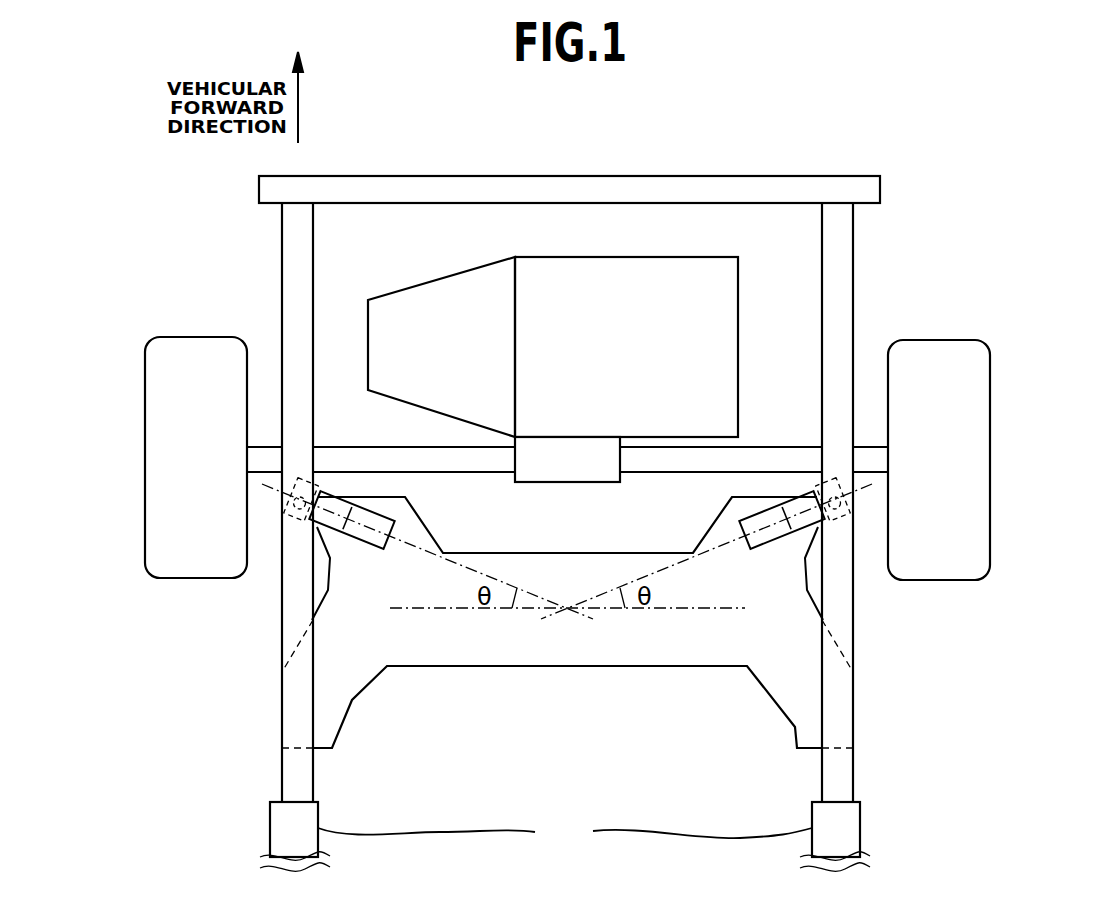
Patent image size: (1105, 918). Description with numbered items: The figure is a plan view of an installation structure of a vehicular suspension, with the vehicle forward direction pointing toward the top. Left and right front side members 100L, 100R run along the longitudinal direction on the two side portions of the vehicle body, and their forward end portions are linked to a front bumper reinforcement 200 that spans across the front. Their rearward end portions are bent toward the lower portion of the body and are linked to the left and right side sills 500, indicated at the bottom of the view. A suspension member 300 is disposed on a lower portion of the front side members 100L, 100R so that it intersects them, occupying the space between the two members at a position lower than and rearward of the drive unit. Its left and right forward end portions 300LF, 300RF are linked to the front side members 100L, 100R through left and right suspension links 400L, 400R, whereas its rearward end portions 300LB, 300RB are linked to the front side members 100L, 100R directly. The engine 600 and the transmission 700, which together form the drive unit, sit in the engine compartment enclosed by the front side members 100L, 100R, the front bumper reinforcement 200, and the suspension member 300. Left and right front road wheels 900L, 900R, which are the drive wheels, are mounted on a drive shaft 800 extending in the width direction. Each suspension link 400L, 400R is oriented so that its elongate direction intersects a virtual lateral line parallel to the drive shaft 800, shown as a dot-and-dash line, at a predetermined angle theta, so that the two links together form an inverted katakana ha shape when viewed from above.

The front bumper reinforcement 200 is at (568, 176).
The left front side member 100L is at (282, 240).
The right front side member 100R is at (853, 240).
The left front road wheel 900L is at (145, 458).
The right front road wheel 900R is at (992, 462).
The drive shaft 800 is at (763, 458).
The transmission 700 is at (428, 282).
The engine 600 is at (663, 257).
The suspension member 300 is at (567, 619).
The left forward end portion of suspension member 300LF is at (408, 505).
The right forward end portion of suspension member 300RF is at (727, 508).
The left rearward end portion of suspension member 300LB is at (338, 733).
The right rearward end portion of suspension member 300RB is at (797, 737).
The left suspension link 400L is at (312, 532).
The right suspension link 400R is at (822, 532).
The side sills 500 is at (565, 832).